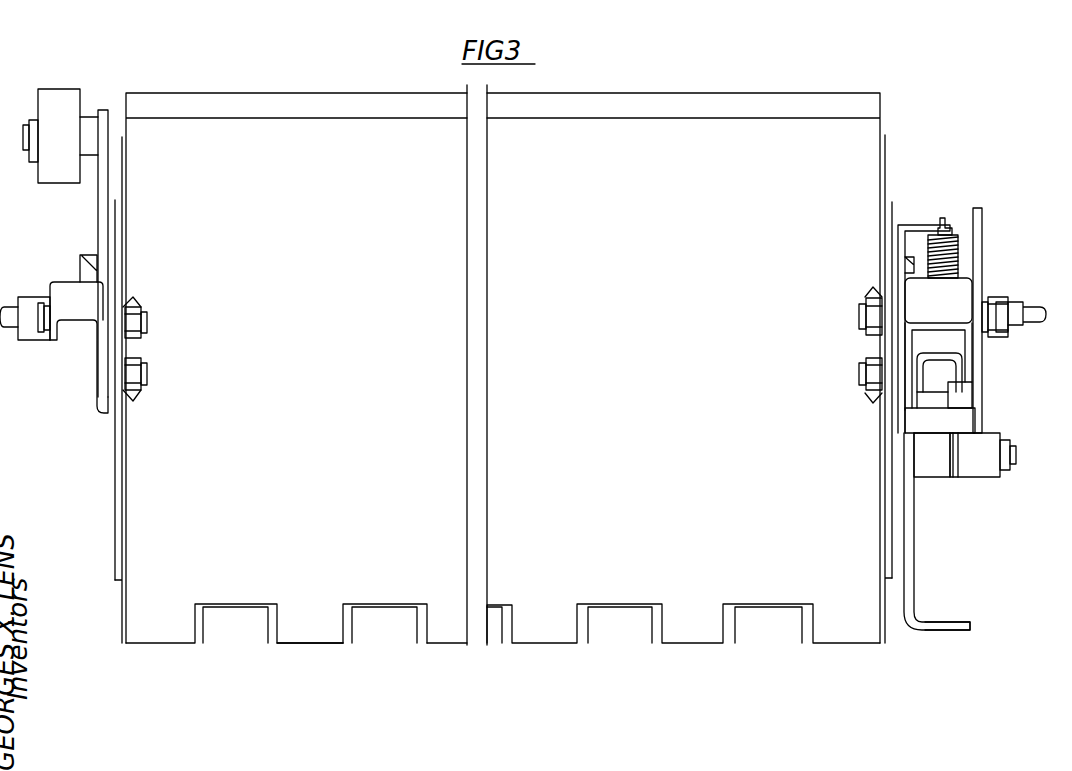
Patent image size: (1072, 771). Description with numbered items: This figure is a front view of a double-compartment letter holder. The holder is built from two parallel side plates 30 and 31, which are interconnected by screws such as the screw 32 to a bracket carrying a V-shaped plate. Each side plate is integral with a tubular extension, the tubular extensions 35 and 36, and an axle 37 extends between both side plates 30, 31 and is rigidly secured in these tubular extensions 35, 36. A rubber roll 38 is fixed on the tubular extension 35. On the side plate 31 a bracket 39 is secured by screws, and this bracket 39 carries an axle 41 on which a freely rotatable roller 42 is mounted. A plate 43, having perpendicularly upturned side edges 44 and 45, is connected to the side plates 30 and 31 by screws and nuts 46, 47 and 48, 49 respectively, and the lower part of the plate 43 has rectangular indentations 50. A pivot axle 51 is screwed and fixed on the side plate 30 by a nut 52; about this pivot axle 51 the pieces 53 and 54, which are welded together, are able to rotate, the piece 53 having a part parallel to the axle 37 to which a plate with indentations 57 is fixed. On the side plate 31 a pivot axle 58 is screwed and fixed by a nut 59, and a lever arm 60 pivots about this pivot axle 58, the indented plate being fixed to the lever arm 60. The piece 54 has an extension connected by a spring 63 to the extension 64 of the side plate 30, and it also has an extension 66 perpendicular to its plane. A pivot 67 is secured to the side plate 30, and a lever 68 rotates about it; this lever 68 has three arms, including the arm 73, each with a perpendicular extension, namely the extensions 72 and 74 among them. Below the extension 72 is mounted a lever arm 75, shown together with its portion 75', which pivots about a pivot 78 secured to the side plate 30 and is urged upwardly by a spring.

The side plate 30 is at (893, 225).
The side plate 31 is at (115, 236).
The screw 32 is at (905, 262).
The tubular extension 35 is at (1012, 337).
The tubular extension 36 is at (33, 340).
The axle 37 is at (13, 307).
The rubber roll 38 is at (996, 300).
The bracket 39 is at (98, 215).
The axle 41 is at (85, 117).
The freely rotatable roller 42 is at (38, 103).
The plate 43 is at (503, 365).
The upturned side edge 44 is at (885, 515).
The upturned side edge 45 is at (126, 490).
The screw 46 is at (859, 370).
The nut 47 is at (872, 395).
The screw 48 is at (148, 385).
The nut 49 is at (140, 398).
The rectangular indentation 50 is at (307, 632).
The pivot axle 51 is at (859, 307).
The nut 52 is at (880, 298).
The piece 53 is at (938, 344).
The piece 54 is at (982, 218).
The indentation 57 is at (387, 632).
The pivot axle 58 is at (148, 325).
The nut 59 is at (135, 300).
The lever arm 60 is at (79, 334).
The spring 63 is at (948, 234).
The extension 64 is at (920, 225).
The extension 66 is at (963, 394).
The pivot 67 is at (932, 402).
The lever 68 is at (920, 345).
The extension 72 is at (940, 422).
The arm 73 is at (915, 555).
The extension 74 is at (950, 622).
The lever arm 75 is at (935, 474).
The cylinder 75' is at (977, 474).
The pivot 78 is at (1012, 447).